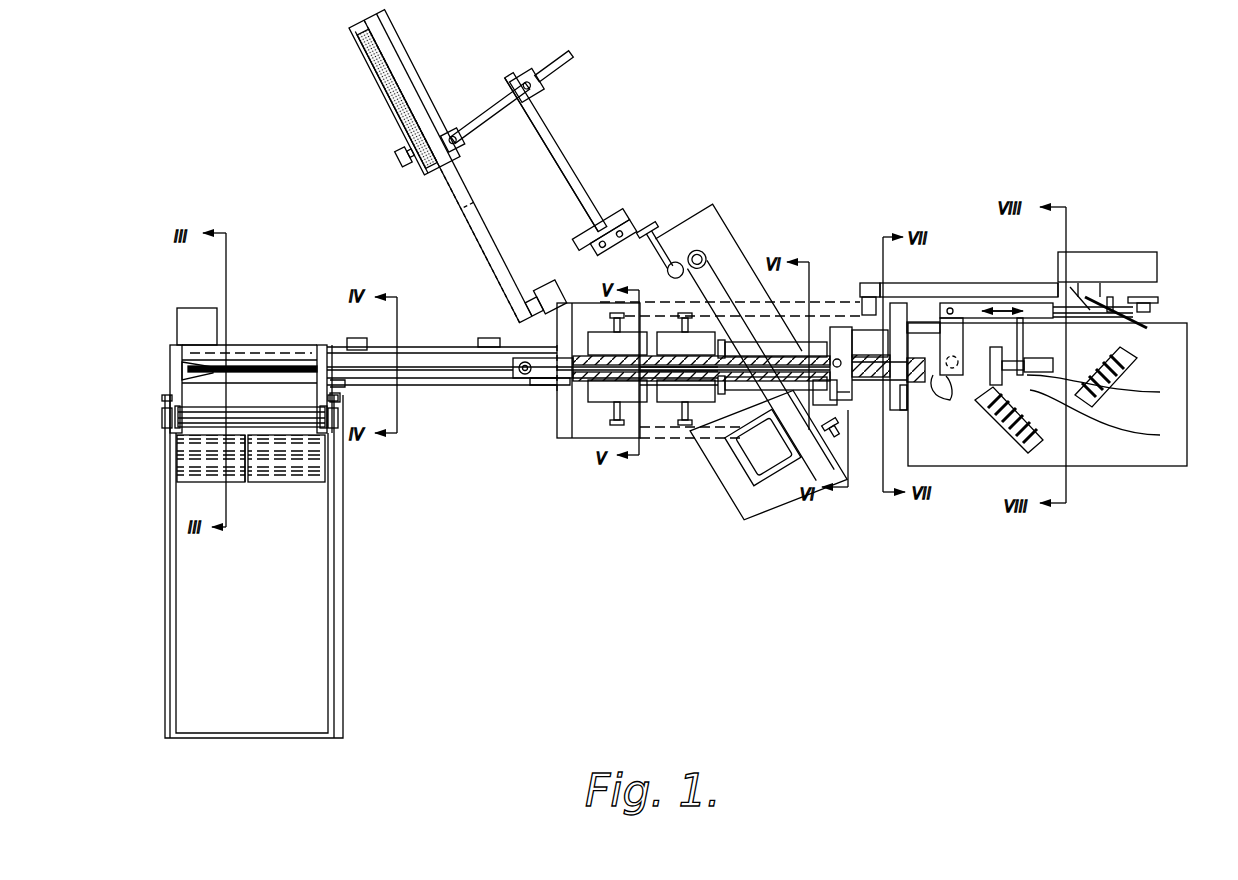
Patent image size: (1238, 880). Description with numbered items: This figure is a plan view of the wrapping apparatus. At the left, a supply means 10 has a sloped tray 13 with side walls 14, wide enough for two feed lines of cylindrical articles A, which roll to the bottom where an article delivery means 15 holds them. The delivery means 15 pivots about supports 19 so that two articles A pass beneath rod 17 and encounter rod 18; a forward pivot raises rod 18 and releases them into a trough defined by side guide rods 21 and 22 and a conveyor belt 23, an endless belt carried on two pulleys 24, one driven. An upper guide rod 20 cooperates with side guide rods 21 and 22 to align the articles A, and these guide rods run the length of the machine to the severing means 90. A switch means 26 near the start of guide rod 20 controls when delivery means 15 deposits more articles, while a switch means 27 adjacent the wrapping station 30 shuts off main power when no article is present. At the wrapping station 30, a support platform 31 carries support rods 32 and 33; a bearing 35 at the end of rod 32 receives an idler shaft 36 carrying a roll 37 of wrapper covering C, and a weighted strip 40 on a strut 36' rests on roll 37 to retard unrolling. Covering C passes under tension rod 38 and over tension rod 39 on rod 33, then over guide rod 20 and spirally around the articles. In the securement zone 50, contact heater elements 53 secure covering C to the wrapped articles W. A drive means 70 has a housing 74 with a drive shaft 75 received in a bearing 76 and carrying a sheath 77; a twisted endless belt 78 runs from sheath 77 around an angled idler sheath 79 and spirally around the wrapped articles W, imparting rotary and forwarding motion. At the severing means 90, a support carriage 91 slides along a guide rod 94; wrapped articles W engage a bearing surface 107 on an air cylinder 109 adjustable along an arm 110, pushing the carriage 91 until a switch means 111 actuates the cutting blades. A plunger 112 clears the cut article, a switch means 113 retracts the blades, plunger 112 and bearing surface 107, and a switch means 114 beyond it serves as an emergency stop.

The supply means 10 is at (257, 332).
The sloped tray 13 is at (262, 616).
The side walls 14 is at (165, 600).
The article delivery means 15 is at (150, 418).
The rod 17 is at (203, 418).
The rod 18 is at (240, 408).
The supports 19 is at (338, 430).
The upper guide rod 20 is at (401, 385).
The side guide rod 21 is at (345, 386).
The side guide rod 22 is at (391, 347).
The conveyor belt 23 is at (258, 366).
The pulleys 24 is at (190, 369).
The switch means 26 is at (356, 338).
The switch means 27 is at (491, 338).
The wrapping station 30 is at (591, 182).
The support platform 31 is at (714, 207).
The support rod 32 is at (586, 204).
The support rod 33 is at (584, 283).
The bearing 35 is at (541, 60).
The idler shaft 36 is at (490, 113).
The strut 36' is at (405, 92).
The roll 37 is at (452, 200).
The tension rod 38 is at (545, 283).
The tension rod 39 is at (504, 385).
The weighted strip 40 is at (361, 46).
The securement zone 50 is at (586, 468).
The contact heater elements 53 is at (605, 398).
The drive means 70 is at (801, 500).
The housing 74 is at (741, 490).
The drive shaft 75 is at (841, 440).
The bearing 76 is at (836, 440).
The sheath 77 is at (771, 500).
The endless belt 78 is at (701, 290).
The idler sheath 79 is at (711, 250).
The article severing means 90 is at (1004, 473).
The support carriage 91 is at (973, 305).
The guide rod 94 is at (863, 300).
The bearing surface 107 is at (986, 362).
The air cylinder 109 is at (1056, 362).
The arm 110 is at (1023, 350).
The switch means 111 is at (899, 298).
The plunger 112 is at (950, 400).
The switch means 113 is at (1071, 287).
The switch means 114 is at (1151, 320).
The cylindrical articles A is at (269, 482).
The wrapper covering C is at (491, 258).
The wrapped articles W is at (1138, 375).